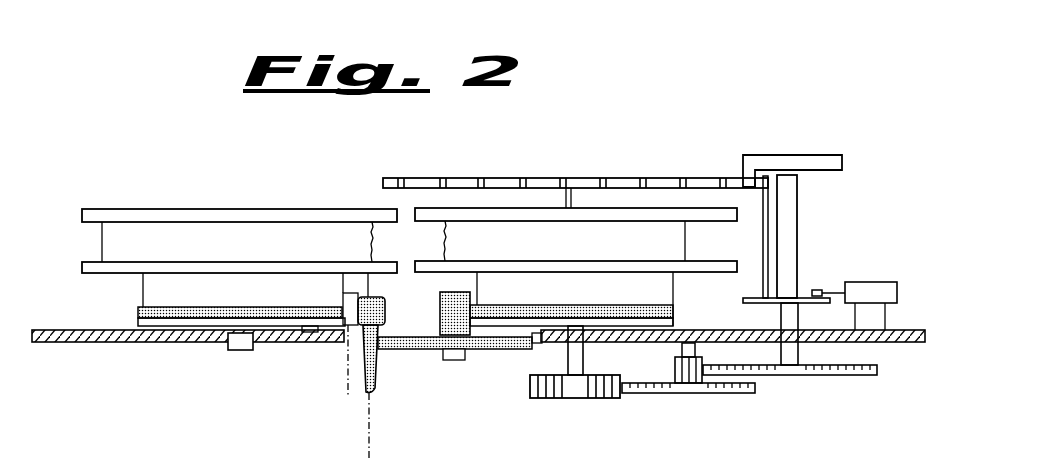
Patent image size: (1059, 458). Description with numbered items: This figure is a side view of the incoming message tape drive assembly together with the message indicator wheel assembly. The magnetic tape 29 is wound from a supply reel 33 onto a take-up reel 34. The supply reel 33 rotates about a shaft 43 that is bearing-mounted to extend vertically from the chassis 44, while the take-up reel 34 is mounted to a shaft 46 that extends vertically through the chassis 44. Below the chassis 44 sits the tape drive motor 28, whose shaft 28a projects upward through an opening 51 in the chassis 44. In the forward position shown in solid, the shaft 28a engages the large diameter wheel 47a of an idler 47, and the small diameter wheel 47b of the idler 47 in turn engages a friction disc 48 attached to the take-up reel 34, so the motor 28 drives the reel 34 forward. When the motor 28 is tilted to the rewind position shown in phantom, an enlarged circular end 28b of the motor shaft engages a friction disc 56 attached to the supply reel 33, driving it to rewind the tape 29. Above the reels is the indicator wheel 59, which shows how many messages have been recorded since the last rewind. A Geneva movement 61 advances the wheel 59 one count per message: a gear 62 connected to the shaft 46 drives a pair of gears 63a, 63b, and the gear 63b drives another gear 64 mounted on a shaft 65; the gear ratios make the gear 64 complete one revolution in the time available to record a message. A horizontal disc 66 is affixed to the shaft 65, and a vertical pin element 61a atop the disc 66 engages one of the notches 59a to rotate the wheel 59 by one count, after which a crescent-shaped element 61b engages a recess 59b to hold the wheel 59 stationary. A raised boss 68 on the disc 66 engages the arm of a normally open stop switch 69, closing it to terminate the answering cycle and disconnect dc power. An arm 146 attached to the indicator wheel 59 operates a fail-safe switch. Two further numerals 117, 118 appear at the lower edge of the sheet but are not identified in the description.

The tape drive motor 28 is at (369, 442).
The motor shaft 28a is at (373, 370).
The enlarged circular end of the motor shaft 28b is at (372, 295).
The magnetic tape 29 is at (213, 218).
The supply reel 33 is at (177, 203).
The take-up reel 34 is at (701, 252).
The shaft 43 is at (231, 346).
The chassis 44 is at (98, 336).
The shaft 46 is at (576, 364).
The idler 47 is at (426, 313).
The large diameter wheel 47a is at (422, 352).
The small diameter wheel 47b is at (462, 303).
The friction disc 48 is at (592, 299).
The opening 51 is at (241, 335).
The friction disc 56 is at (243, 307).
The indicator wheel 59 is at (476, 181).
The notches 59a is at (601, 181).
The recess 59b is at (542, 181).
The Geneva movement 61 is at (770, 290).
The vertical pin element 61a is at (762, 206).
The crescent-shaped element 61b is at (789, 268).
The gear 62 is at (594, 400).
The gear 63a is at (683, 393).
The gear 63b is at (675, 369).
The gear 64 is at (691, 348).
The shaft 65 is at (783, 355).
The horizontal disc 66 is at (822, 303).
The raised boss 68 is at (816, 291).
The stop switch 69 is at (883, 292).
The sensor 117 is at (112, 453).
The sensor 118 is at (224, 452).
The arm 146 is at (793, 159).